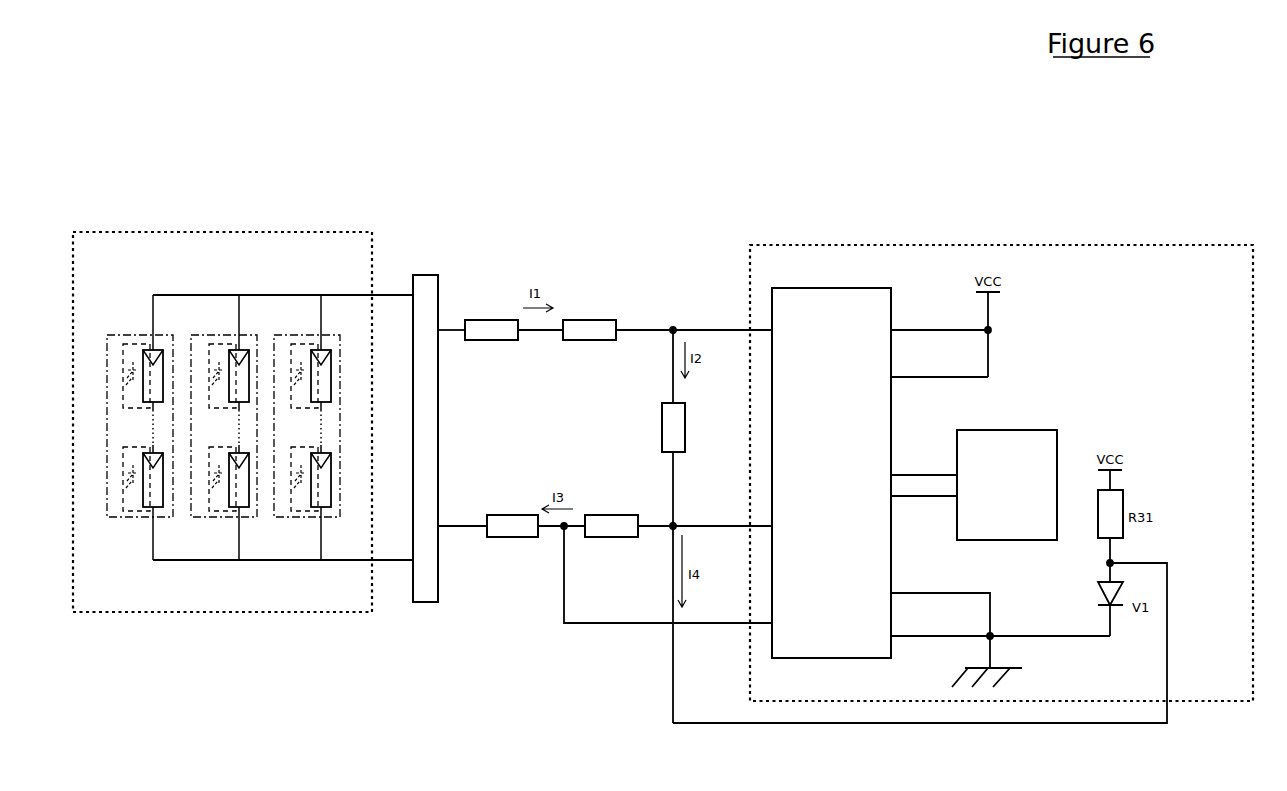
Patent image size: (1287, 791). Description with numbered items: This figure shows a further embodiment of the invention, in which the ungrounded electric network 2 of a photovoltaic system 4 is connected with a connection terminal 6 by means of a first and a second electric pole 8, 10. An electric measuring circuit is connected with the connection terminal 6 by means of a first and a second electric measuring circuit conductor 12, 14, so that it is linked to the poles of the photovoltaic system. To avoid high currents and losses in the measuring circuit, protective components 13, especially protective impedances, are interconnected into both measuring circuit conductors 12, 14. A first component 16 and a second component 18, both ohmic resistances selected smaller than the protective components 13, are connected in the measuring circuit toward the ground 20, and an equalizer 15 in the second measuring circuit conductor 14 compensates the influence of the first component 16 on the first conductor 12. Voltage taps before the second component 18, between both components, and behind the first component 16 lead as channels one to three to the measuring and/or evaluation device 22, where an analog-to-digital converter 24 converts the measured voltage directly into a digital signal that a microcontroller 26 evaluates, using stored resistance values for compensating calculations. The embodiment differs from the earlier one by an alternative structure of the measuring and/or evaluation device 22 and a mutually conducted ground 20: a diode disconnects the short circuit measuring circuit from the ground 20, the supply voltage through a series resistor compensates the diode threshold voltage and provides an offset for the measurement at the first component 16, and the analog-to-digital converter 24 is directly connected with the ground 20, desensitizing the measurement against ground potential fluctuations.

The ungrounded electric network 2 is at (184, 230).
The photovoltaic system 4 is at (284, 312).
The connection terminal 6 is at (428, 274).
The first electric pole 8 is at (393, 562).
The second electric pole 10 is at (385, 293).
The first electric measuring circuit conductor 12 is at (477, 528).
The protective components 13 is at (505, 320).
The second electric measuring circuit conductor 14 is at (458, 329).
The equalizer 15 is at (588, 319).
The first component 16 is at (607, 538).
The second component 18 is at (661, 422).
The ground 20 is at (980, 672).
The measuring and/or evaluation device 22 is at (883, 245).
The analog-to-digital converter 24 is at (812, 287).
The microcontroller 26 is at (1040, 430).